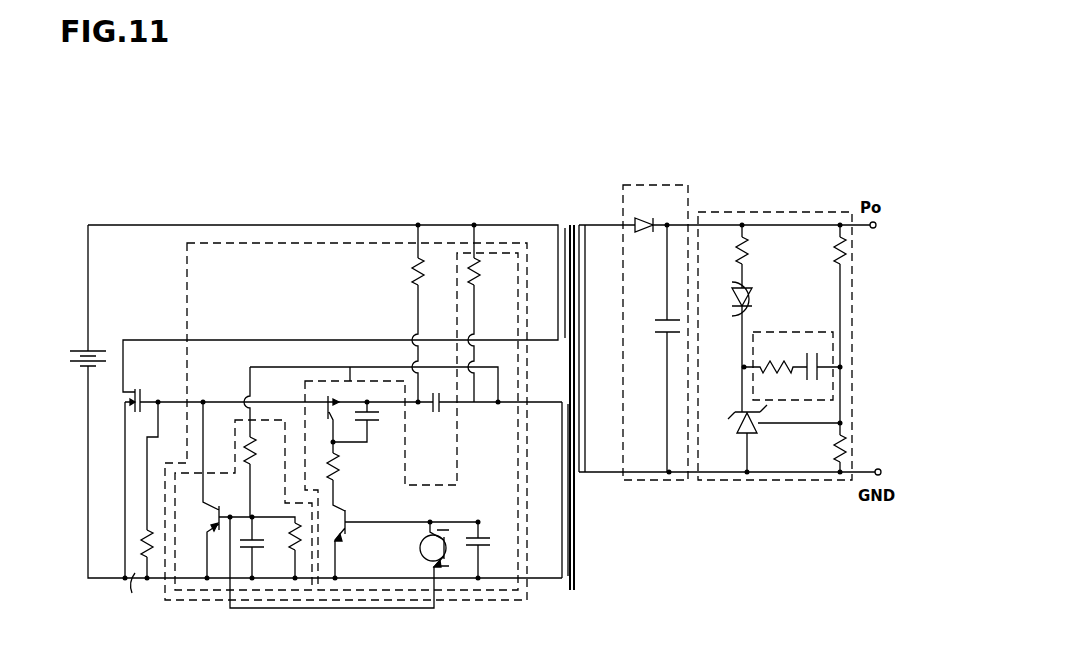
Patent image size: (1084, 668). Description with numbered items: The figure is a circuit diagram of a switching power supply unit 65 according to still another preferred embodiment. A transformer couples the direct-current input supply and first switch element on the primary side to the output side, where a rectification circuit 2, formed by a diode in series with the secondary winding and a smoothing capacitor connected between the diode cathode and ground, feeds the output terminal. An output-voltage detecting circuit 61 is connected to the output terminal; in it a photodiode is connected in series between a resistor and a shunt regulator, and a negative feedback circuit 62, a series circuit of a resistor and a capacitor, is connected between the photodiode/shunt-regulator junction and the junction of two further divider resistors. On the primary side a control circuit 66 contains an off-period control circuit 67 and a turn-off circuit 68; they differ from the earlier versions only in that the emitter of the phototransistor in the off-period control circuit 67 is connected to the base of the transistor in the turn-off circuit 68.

The switching power supply unit 65 is at (313, 172).
The control circuit 66 is at (245, 243).
The off-period control circuit 67 is at (350, 367).
The turn-off circuit 68 is at (265, 420).
The rectification circuit 2 is at (658, 185).
The output-voltage detecting circuit 61 is at (748, 212).
The negative feedback circuit 62 is at (773, 332).